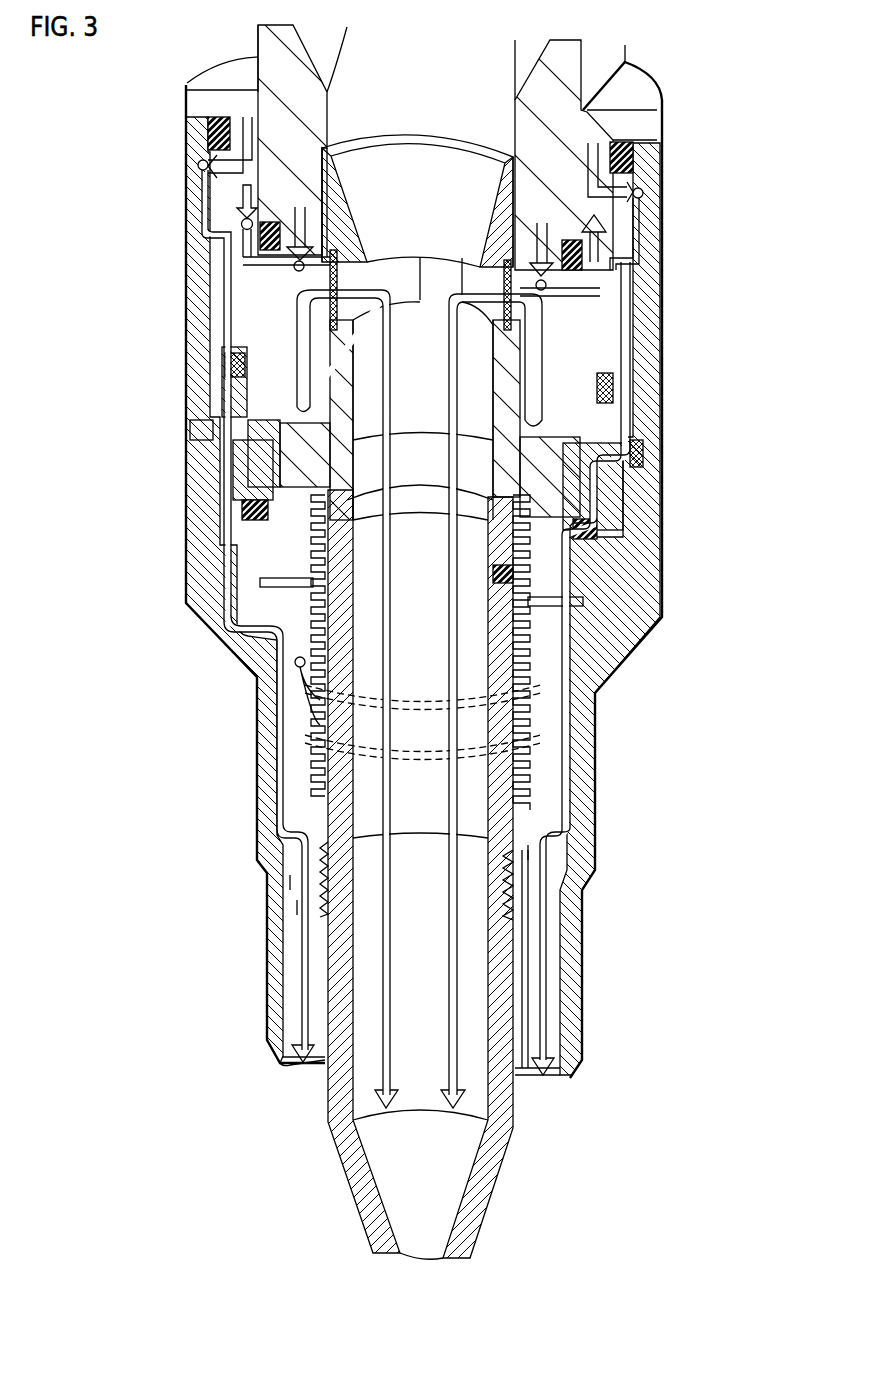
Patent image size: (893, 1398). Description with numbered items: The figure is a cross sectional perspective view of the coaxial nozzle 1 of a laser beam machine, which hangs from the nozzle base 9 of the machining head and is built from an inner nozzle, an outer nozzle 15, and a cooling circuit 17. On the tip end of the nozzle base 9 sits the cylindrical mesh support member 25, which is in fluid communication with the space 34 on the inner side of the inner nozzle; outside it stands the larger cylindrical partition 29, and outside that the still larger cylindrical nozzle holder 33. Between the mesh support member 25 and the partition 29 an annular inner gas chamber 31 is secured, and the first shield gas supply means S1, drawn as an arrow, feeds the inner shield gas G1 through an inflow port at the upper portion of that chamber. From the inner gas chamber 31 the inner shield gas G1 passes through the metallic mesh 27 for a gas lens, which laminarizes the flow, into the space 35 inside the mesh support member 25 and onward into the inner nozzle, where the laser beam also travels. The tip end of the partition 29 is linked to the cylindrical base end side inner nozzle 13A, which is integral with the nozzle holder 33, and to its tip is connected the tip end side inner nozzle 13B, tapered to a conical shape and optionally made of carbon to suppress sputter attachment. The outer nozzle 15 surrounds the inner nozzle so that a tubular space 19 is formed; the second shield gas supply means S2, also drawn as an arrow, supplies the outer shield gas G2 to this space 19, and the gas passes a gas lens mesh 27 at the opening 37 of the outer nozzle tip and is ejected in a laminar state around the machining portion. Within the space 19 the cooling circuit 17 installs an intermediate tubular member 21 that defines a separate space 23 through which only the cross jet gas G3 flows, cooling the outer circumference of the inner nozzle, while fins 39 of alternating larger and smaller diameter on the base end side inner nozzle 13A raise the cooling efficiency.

The coaxial nozzle 1 is at (604, 766).
The nozzle base 9 is at (627, 50).
The base end side inner nozzle 13A is at (528, 893).
The tip end side inner nozzle 13B is at (528, 1003).
The outer nozzle 15 is at (255, 820).
The cooling circuit 17 is at (537, 750).
The space 19 is at (290, 918).
The intermediate tubular member 21 is at (290, 768).
The space 23 is at (303, 743).
The mesh support member 25 is at (503, 382).
The mesh 27 is at (505, 293).
The partition 29 is at (553, 477).
The inner gas chamber 31 is at (283, 337).
The nozzle holder 33 is at (662, 260).
The space 34 is at (470, 630).
The space 35 is at (430, 443).
The opening 37 is at (312, 1055).
The fins 39 is at (528, 805).
The inner shield gas G1 is at (523, 853).
The outer shield gas G2 is at (295, 882).
The cross jet gas G3 is at (305, 665).
The first shield gas supply means S1 is at (300, 210).
The second shield gas supply means S2 is at (245, 117).